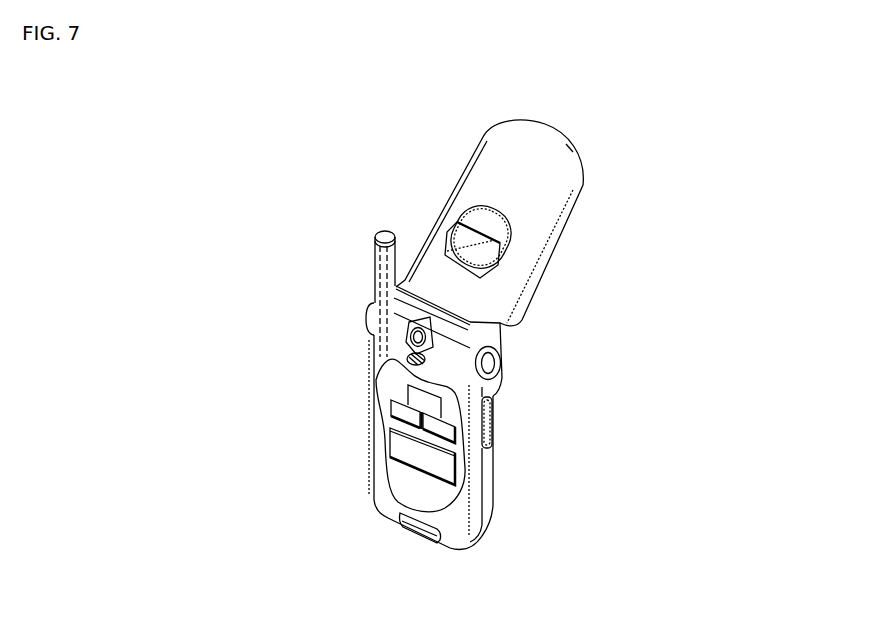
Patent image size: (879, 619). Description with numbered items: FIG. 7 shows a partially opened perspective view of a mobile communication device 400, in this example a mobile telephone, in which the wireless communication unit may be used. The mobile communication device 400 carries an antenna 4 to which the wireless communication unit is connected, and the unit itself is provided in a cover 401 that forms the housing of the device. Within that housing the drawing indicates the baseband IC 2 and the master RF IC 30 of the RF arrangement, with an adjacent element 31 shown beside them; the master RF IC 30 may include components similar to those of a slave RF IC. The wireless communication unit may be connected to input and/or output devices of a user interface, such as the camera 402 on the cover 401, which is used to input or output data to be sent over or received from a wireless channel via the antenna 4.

The mobile communication device 400 is at (408, 334).
The cover 401 is at (489, 503).
The camera 402 is at (406, 350).
The antenna 4 is at (383, 272).
The keypad 31 is at (388, 407).
The master RF IC 30 is at (447, 440).
The baseband IC 2 is at (447, 475).